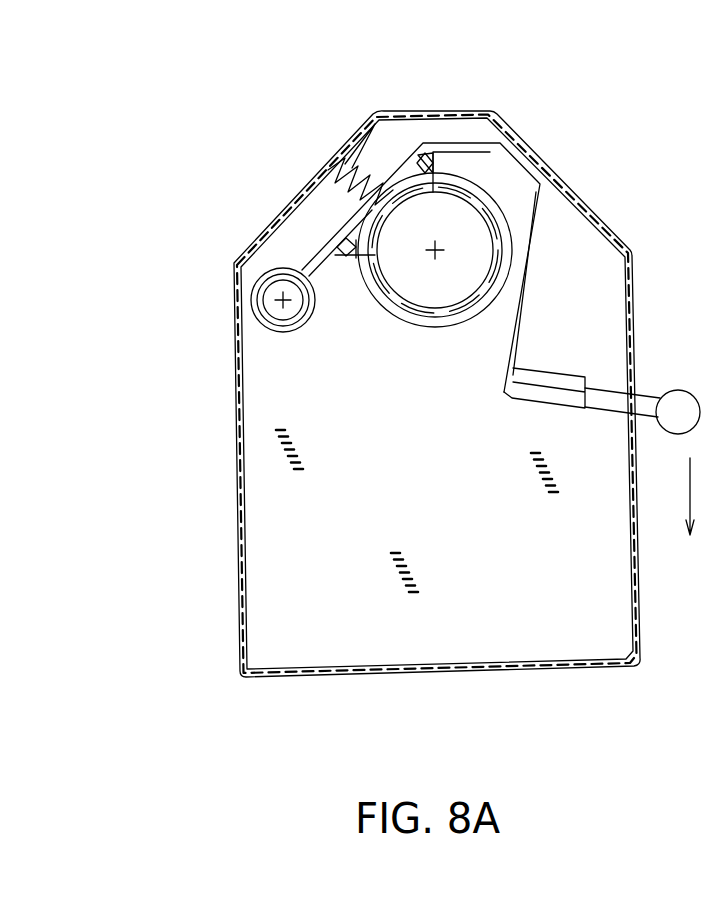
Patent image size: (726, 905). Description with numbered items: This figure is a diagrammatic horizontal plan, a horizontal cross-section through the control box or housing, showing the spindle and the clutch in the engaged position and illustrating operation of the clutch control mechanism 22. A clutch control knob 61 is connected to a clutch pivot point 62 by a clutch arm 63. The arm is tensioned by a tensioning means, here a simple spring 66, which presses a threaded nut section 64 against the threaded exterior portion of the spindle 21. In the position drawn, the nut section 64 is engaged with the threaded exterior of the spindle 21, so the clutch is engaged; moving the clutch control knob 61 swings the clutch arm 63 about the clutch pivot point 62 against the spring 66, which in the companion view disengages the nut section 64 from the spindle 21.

The spindle 21 is at (487, 218).
The clutch control mechanism 22 is at (278, 360).
The clutch control knob 61 is at (680, 400).
The clutch pivot point 62 is at (267, 277).
The clutch arm 63 is at (500, 385).
The threaded nut section 64 is at (430, 173).
The spring 66 is at (366, 160).